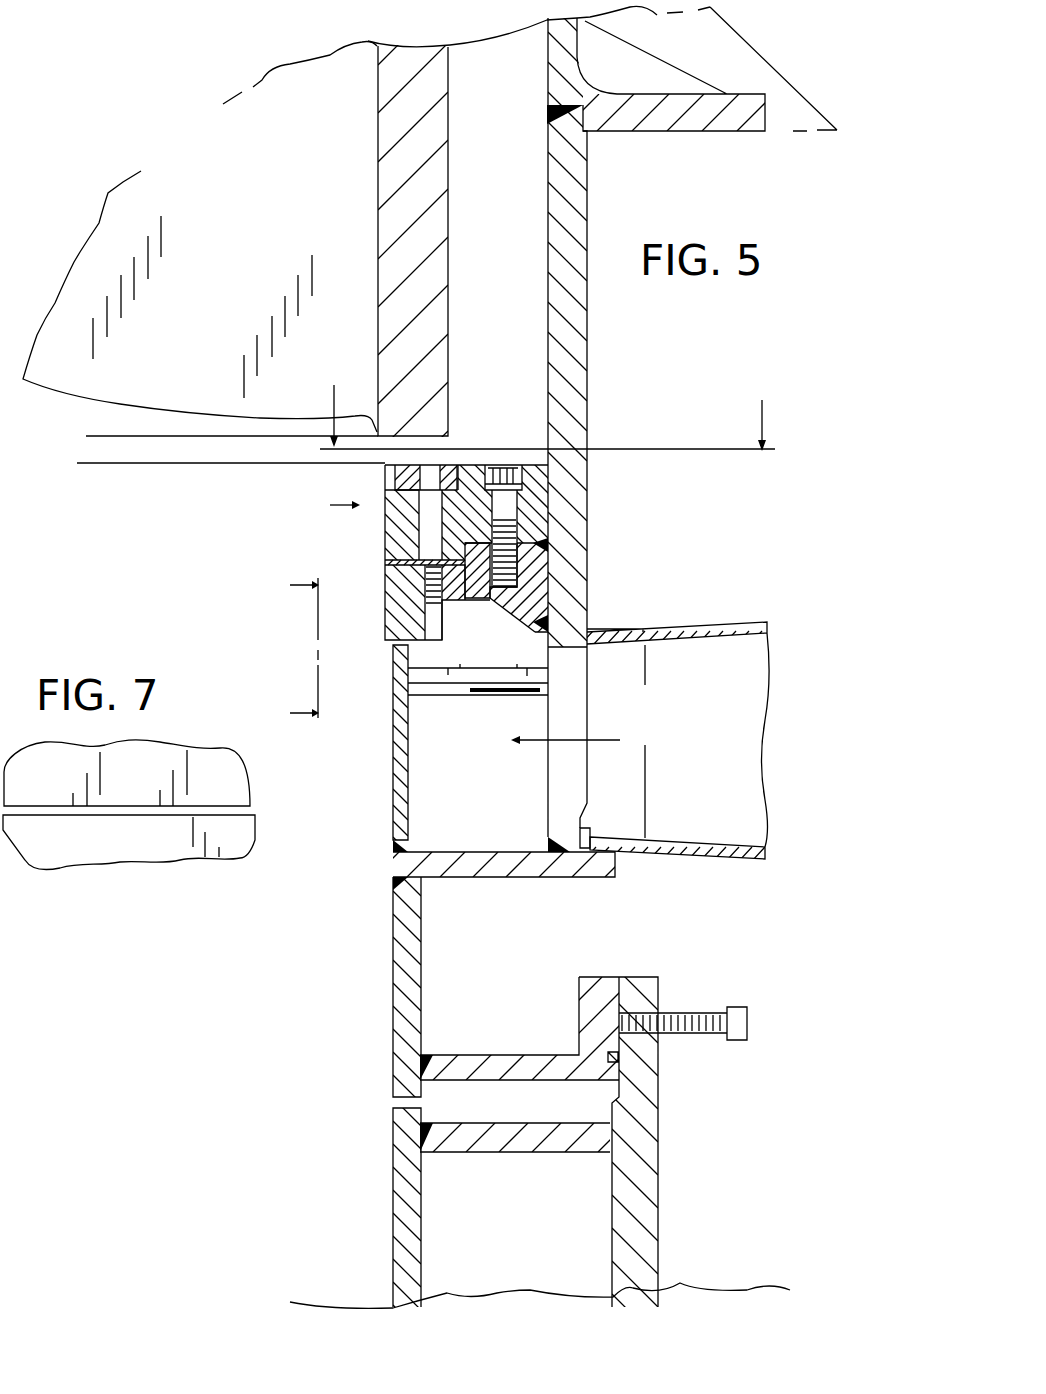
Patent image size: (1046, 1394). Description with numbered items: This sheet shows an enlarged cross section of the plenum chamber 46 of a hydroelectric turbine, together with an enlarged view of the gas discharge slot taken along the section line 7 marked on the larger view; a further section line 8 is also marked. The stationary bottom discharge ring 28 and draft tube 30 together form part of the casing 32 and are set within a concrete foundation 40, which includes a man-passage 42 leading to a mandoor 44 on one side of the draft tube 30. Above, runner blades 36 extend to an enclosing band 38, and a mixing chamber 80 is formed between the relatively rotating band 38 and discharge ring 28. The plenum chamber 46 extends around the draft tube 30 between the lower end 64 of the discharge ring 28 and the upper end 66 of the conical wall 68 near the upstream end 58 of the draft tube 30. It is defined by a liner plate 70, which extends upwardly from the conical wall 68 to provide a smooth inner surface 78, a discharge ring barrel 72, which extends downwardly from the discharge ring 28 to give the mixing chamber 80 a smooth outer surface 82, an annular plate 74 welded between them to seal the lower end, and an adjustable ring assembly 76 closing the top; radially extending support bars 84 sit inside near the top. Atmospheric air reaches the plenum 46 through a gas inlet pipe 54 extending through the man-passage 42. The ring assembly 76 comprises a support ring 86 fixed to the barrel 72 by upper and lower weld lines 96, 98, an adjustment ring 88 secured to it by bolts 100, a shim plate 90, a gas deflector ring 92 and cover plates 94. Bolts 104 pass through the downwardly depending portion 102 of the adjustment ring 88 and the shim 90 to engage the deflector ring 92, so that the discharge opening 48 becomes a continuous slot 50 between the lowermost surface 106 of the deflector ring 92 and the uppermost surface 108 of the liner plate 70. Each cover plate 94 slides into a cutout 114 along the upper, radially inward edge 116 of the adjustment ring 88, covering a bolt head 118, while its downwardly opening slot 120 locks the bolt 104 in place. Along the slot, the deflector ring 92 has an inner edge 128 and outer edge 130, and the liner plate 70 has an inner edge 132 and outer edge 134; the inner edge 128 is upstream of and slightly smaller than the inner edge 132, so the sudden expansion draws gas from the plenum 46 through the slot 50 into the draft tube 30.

In FIG. 5, the section line 7— 7 is at (293, 650).
In FIG. 5, the section line 8— 8 is at (548, 403).
In FIG. 5, the bottom discharge ring 28 is at (548, 68).
In FIG. 5, the draft tube 30 is at (393, 1000).
In FIG. 5, the casing 32 is at (393, 947).
In FIG. 5, the runner blades 36 is at (73, 394).
In FIG. 5, the enclosing band 38 is at (448, 165).
In FIG. 5, the concrete foundation 40 is at (735, 65).
In FIG. 5, the man-passage 42 is at (697, 541).
In FIG. 5, the mandoor 44 is at (658, 1165).
In FIG. 5, the plenum chamber 46 is at (530, 759).
In FIG. 5, the discharge opening 48 is at (381, 655).
In FIG. 7, the discharge opening 48 is at (183, 822).
In FIG. 5, the continuous slot 50 is at (379, 645).
In FIG. 7, the continuous slot 50 is at (73, 822).
In FIG. 5, the gas inlet pipe 54 is at (720, 860).
In FIG. 5, the upstream end 58 is at (210, 458).
In FIG. 5, the lower end of discharge ring 64 is at (548, 112).
In FIG. 5, the upper end of conical wall 66 is at (393, 880).
In FIG. 5, the conical wall 68 is at (393, 1045).
In FIG. 5, the liner plate 70 is at (393, 772).
In FIG. 5, the discharge ring barrel 72 is at (587, 378).
In FIG. 5, the annular plate 74 is at (497, 877).
In FIG. 5, the adjustable ring assembly 76 is at (328, 505).
In FIG. 5, the inner surface 78 is at (393, 847).
In FIG. 5, the mixing chamber 80 is at (491, 274).
In FIG. 5, the outer surface 82 is at (548, 226).
In FIG. 5, the support bars 84 is at (477, 695).
In FIG. 5, the support ring 86 is at (548, 565).
In FIG. 5, the adjustment ring 88 is at (585, 495).
In FIG. 5, the shim plate 90 is at (385, 565).
In FIG. 5, the gas deflector ring 92 is at (385, 575).
In FIG. 5, the cover plate 94 is at (385, 474).
In FIG. 5, the upper weld line 96 is at (548, 540).
In FIG. 5, the lower weld line 98 is at (548, 622).
In FIG. 5, the bolts 100 is at (503, 466).
In FIG. 5, the downwardly depending portion 102 is at (385, 595).
In FIG. 5, the bolts 104 is at (385, 517).
In FIG. 5, the lowermost surface 106 is at (440, 637).
In FIG. 5, the uppermost surface 108 is at (385, 620).
In FIG. 5, the cutouts 114 is at (385, 490).
In FIG. 5, the upper, radially inward edge 116 is at (385, 468).
In FIG. 5, the bolt head 118 is at (450, 470).
In FIG. 5, the downwardly opening slot 120 is at (410, 478).
In FIG. 5, the inner edge of deflector ring 128 is at (385, 633).
In FIG. 5, the outer edge of deflector ring 130 is at (435, 598).
In FIG. 5, the inner edge of liner plate 132 is at (395, 655).
In FIG. 5, the outer edge of liner plate 134 is at (412, 646).